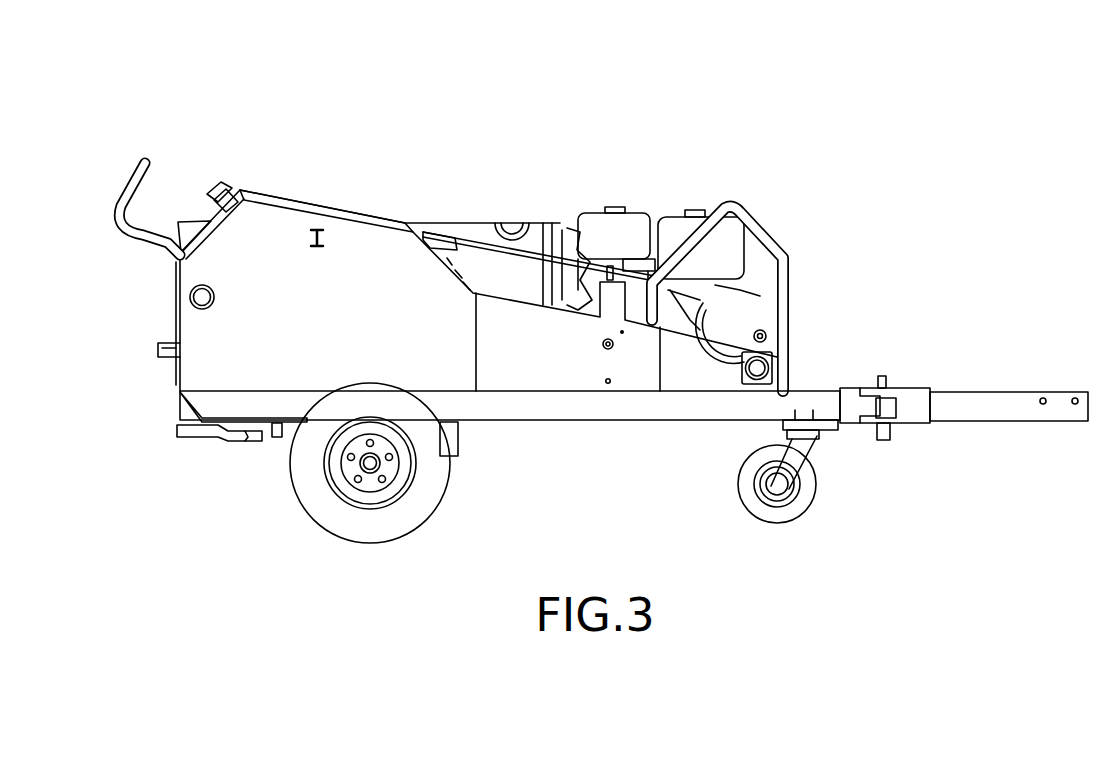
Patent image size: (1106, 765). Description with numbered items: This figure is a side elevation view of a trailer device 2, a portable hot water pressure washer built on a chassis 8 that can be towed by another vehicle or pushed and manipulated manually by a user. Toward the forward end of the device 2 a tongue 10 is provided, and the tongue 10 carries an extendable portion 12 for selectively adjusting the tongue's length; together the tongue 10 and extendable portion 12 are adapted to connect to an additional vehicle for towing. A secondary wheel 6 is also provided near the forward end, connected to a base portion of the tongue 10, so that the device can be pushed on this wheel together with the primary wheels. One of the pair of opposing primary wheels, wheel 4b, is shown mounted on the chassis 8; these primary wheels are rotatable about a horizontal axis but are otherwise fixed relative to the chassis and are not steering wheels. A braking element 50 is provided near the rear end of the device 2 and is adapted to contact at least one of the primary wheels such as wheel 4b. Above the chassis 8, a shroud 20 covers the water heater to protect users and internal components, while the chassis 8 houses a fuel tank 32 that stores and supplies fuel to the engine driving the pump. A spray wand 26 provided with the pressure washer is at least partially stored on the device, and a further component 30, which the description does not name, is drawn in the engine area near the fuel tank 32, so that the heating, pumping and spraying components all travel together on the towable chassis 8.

The trailer device 2 is at (850, 223).
The shroud 20 is at (471, 226).
The spray wand 26 is at (533, 250).
The engine 30 is at (592, 230).
The fuel tank 32 is at (697, 212).
The chassis 8 is at (573, 424).
The braking element 50 is at (205, 441).
The primary wheel 4b is at (438, 488).
The secondary wheel 6 is at (806, 485).
The tongue 10 is at (905, 395).
The extendable portion 12 is at (1002, 400).